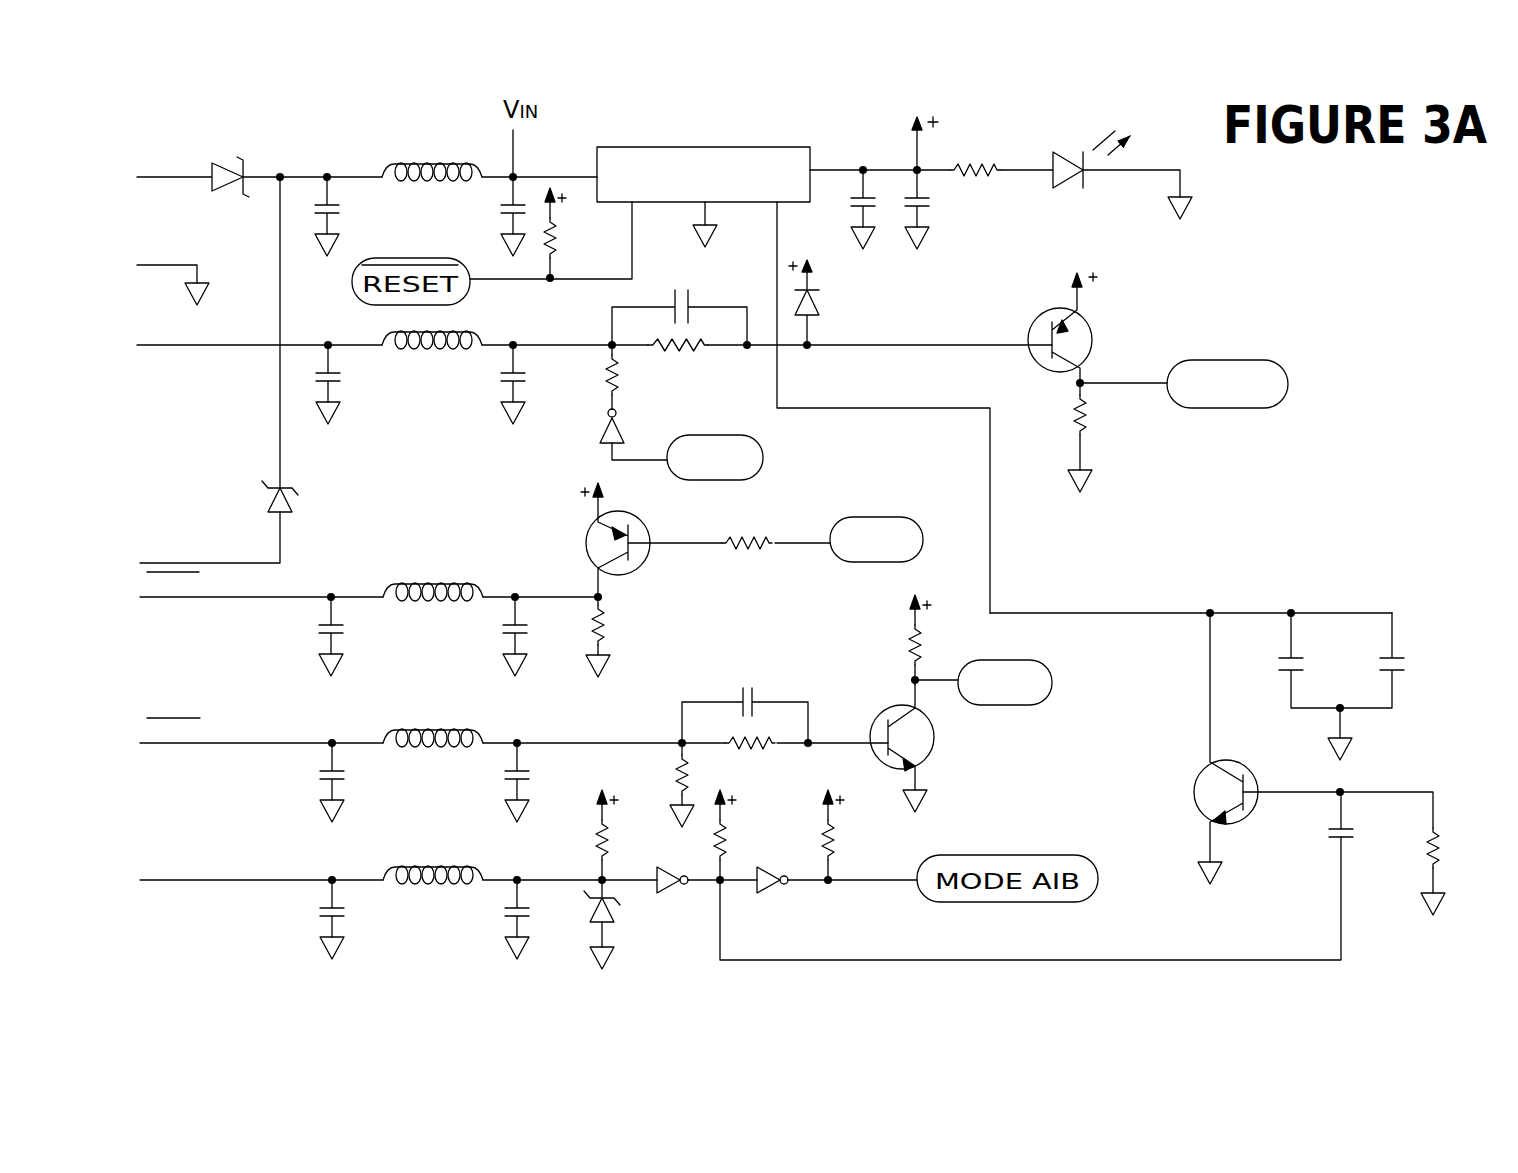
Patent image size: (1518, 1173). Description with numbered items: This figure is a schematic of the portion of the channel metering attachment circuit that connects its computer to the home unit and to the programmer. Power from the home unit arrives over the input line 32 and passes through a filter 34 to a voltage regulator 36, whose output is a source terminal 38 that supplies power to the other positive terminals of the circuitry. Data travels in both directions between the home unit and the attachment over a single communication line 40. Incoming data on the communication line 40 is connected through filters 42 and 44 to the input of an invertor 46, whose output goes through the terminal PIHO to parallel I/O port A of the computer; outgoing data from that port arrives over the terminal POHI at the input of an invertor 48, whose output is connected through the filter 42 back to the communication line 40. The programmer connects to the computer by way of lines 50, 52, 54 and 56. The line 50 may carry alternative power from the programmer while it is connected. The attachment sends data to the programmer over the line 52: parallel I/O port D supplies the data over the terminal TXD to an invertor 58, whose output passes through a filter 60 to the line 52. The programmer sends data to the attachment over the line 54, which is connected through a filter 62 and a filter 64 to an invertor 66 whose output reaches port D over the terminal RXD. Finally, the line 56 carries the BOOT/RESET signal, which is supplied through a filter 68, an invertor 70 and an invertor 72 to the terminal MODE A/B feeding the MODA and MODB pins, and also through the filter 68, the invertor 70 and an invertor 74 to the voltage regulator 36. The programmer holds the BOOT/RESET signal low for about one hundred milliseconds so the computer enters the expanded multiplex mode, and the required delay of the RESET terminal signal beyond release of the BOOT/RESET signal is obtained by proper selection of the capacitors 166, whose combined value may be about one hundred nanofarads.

The input line 32 is at (175, 180).
The filter 34 is at (420, 137).
The voltage regulator 36 is at (700, 147).
The source terminal 38 is at (917, 143).
The communication line 40 is at (170, 348).
The filter 42 is at (416, 365).
The filter 44 is at (682, 356).
The invertor 46 is at (1105, 322).
The invertor 48 is at (600, 428).
The line 50 is at (283, 543).
The line 52 is at (228, 598).
The line 54 is at (207, 745).
The line 56 is at (223, 886).
The invertor 58 is at (640, 521).
The filter 60 is at (453, 617).
The filter 62 is at (431, 758).
The filter 64 is at (719, 694).
The invertor 66 is at (935, 748).
The filter 68 is at (438, 902).
The invertor 70 is at (668, 892).
The invertor 72 is at (772, 893).
The invertor 74 is at (1195, 800).
The capacitors 166 is at (1402, 686).